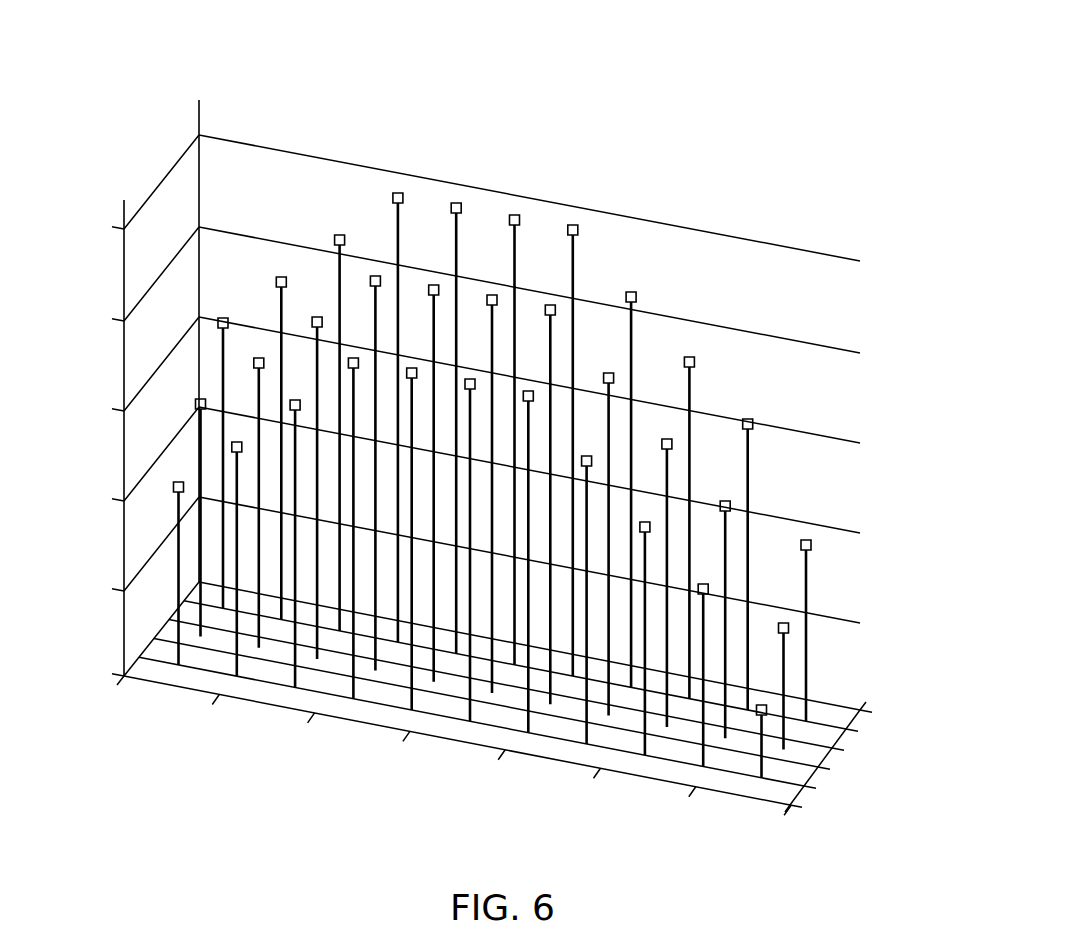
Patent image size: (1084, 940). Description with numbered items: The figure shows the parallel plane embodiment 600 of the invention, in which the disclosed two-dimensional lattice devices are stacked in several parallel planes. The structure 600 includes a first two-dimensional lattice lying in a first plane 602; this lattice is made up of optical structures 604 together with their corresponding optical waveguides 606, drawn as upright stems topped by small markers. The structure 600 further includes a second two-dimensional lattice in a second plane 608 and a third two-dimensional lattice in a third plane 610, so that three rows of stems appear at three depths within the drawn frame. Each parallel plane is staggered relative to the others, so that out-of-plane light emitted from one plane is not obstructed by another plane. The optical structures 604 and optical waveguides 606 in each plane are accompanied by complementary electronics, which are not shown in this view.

The parallel plane embodiment 600 is at (258, 44).
The first plane 602 is at (768, 768).
The optical structures 604 is at (173, 487).
The optical waveguides 606 is at (177, 594).
The second plane 608 is at (789, 674).
The third plane 610 is at (810, 591).